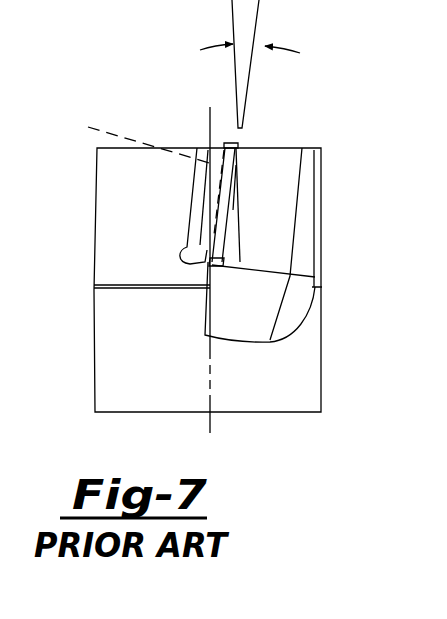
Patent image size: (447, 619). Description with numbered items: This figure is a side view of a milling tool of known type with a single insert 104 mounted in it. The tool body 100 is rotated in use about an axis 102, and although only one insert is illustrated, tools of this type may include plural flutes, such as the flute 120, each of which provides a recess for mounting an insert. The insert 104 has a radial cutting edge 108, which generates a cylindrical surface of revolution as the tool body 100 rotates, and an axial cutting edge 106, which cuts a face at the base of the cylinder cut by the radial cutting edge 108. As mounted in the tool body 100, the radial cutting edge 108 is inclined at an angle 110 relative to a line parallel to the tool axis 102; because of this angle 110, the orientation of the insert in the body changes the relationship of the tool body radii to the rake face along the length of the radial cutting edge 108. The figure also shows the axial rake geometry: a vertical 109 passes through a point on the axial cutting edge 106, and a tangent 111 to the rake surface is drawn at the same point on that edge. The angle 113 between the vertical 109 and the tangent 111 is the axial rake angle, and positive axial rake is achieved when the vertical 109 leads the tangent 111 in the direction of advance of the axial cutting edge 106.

The tool body 100 is at (310, 368).
The axis 102 is at (210, 125).
The insert 104 is at (195, 218).
The axial cutting edge 106 is at (231, 138).
The radial cutting edge 108 is at (262, 185).
The vertical 109 is at (228, 2).
The angle 110 is at (288, 50).
The tangent 111 is at (138, 175).
The axial rake angle 113 is at (212, 231).
The flute 120 is at (243, 235).